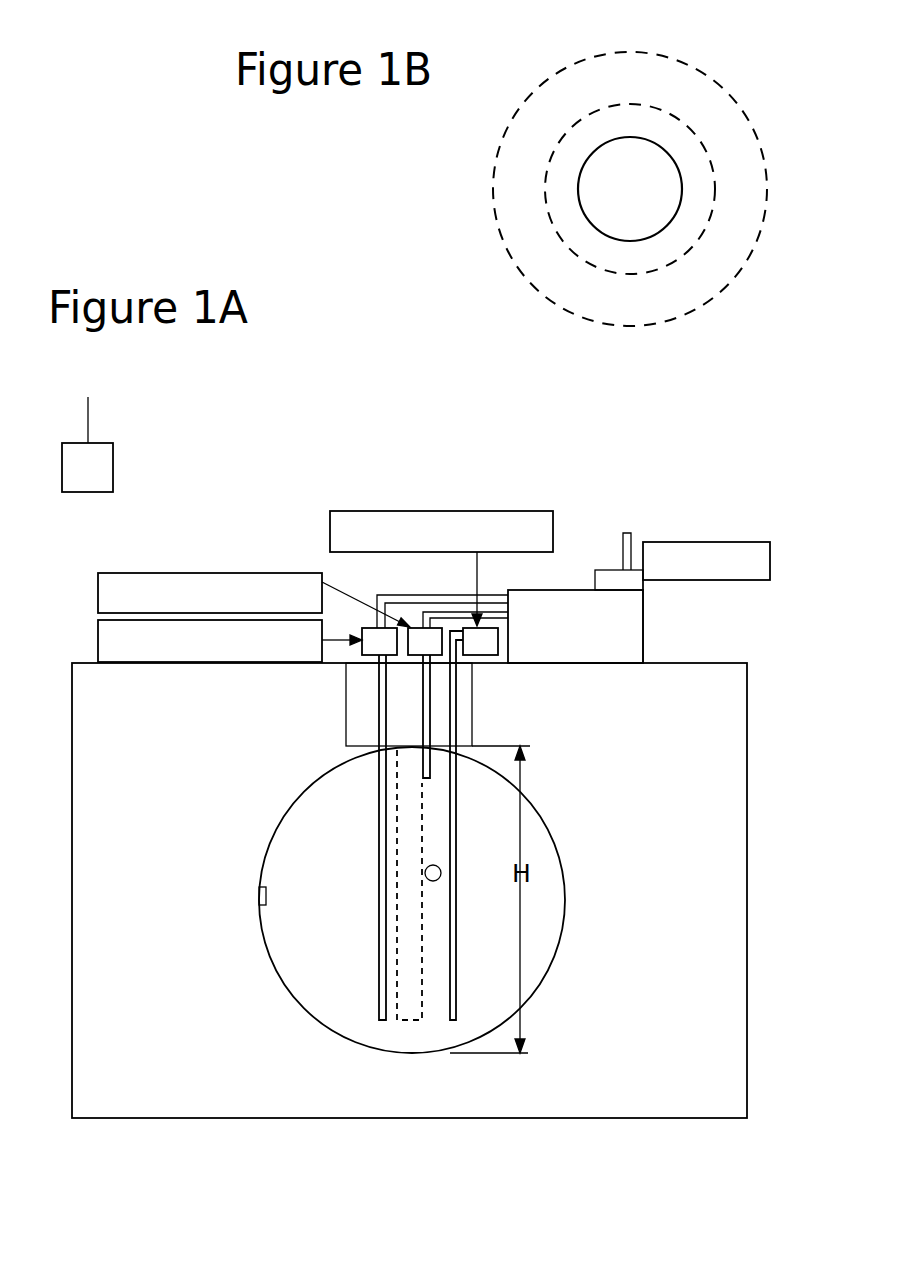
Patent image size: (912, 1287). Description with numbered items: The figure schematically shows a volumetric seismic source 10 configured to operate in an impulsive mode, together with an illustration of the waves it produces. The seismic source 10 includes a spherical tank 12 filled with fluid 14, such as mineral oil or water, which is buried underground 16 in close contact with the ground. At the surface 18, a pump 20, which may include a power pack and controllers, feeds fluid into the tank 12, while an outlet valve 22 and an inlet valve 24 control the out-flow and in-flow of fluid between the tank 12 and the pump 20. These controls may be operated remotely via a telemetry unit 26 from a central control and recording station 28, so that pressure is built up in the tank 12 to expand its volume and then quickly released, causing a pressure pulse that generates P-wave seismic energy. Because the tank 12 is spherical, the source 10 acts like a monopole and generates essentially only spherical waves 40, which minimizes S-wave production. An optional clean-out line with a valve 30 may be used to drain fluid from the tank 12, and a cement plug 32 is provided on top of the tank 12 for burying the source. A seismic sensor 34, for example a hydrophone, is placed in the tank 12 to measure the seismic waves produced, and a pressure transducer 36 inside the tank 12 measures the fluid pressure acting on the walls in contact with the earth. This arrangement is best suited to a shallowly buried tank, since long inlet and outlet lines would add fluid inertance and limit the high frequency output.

In FIG. 1B, the seismic source 10 is at (617, 192).
In FIG. 1A, the seismic source 10 is at (414, 459).
In FIG. 1A, the spherical tank 12 is at (277, 831).
In FIG. 1A, the fluid 14 is at (438, 795).
In FIG. 1A, the underground 16 is at (228, 1002).
In FIG. 1A, the surface 18 is at (727, 663).
In FIG. 1A, the pump 20 is at (643, 633).
In FIG. 1A, the valve 22 is at (215, 573).
In FIG. 1A, the valve 24 is at (98, 641).
In FIG. 1A, the telemetry unit 26 is at (697, 542).
In FIG. 1A, the central control and recording station 28 is at (100, 467).
In FIG. 1A, the valve 30 is at (495, 511).
In FIG. 1A, the cement plug 32 is at (400, 712).
In FIG. 1A, the seismic sensor 34 is at (445, 852).
In FIG. 1A, the pressure transducer 36 is at (258, 897).
In FIG. 1B, the spherical waves 40 is at (575, 63).